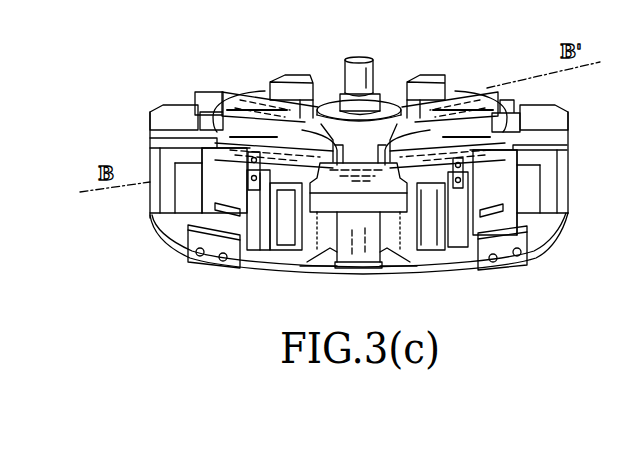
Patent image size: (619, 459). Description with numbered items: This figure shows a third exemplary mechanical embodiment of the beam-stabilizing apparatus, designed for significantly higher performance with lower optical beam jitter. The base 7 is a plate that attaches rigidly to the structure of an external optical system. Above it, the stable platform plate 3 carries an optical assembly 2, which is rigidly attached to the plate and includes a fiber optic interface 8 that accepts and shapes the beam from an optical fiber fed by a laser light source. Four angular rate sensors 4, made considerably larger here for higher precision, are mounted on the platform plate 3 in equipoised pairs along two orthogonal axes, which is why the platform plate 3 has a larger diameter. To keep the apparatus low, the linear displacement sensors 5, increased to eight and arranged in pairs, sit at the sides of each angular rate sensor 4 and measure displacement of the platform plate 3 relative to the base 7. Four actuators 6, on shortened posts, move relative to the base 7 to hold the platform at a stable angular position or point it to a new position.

The optical assembly 2 is at (331, 103).
The platform plate 3 is at (213, 91).
The angular rate sensors 4 is at (208, 194).
The linear displacement sensors 5 is at (245, 262).
The actuators 6 is at (365, 270).
The base 7 is at (452, 260).
The fiber optic interface 8 is at (368, 80).